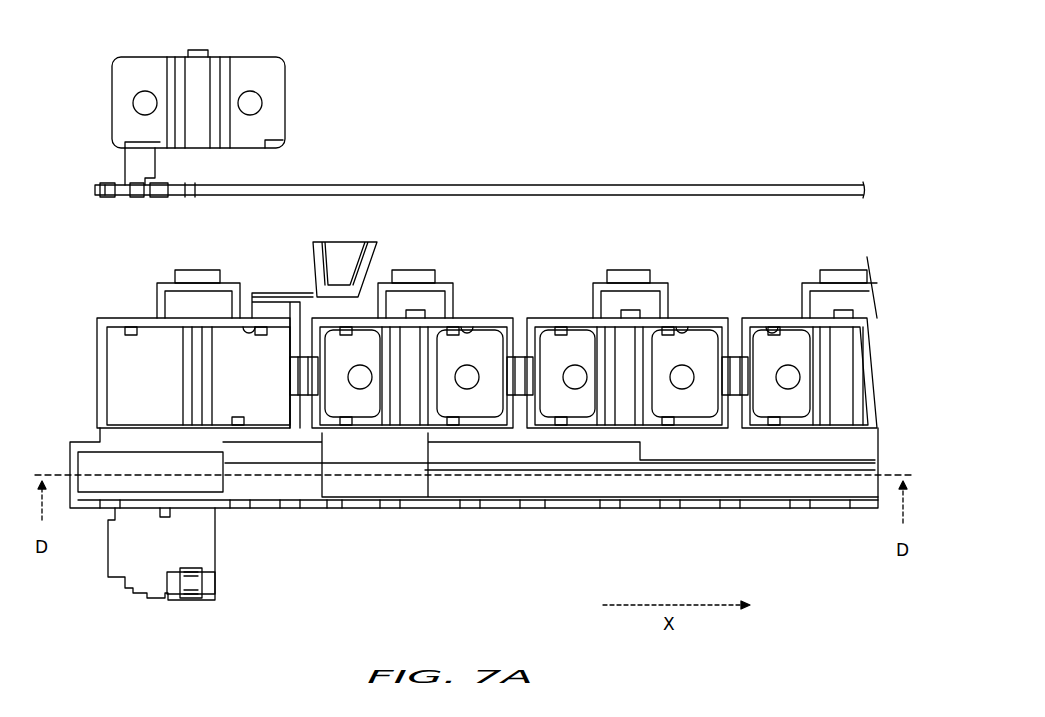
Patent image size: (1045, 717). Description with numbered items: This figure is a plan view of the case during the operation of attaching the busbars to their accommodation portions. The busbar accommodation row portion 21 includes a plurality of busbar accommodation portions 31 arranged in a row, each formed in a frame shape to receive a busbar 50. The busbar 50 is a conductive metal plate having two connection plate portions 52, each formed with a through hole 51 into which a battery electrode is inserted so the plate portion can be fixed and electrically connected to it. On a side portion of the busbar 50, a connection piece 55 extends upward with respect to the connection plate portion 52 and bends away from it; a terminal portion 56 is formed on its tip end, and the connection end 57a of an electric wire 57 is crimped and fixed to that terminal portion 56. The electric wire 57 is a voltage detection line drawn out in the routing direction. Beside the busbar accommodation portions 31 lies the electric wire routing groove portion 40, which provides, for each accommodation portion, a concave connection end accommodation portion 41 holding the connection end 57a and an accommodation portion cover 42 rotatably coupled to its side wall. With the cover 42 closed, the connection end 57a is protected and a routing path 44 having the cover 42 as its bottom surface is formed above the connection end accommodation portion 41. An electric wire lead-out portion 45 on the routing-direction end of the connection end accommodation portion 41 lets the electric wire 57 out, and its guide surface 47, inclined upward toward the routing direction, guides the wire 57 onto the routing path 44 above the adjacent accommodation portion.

The busbar accommodation row portion 21 is at (705, 318).
The busbar accommodation portion 31 is at (248, 325).
The electric wire routing groove portion 40 is at (850, 512).
The connection end accommodation portion 41 is at (145, 490).
The accommodation portion cover 42 is at (147, 572).
The routing path 44 is at (363, 487).
The electric wire lead-out portion 45 is at (233, 490).
The guide surface 47 is at (239, 462).
The busbar 50 is at (447, 176).
The through hole 51 is at (135, 103).
The connection plate portion 52 is at (148, 62).
The connection piece 55 is at (125, 168).
The terminal portion 56 is at (137, 197).
The electric wire 57 is at (420, 185).
The connection end 57a is at (168, 197).